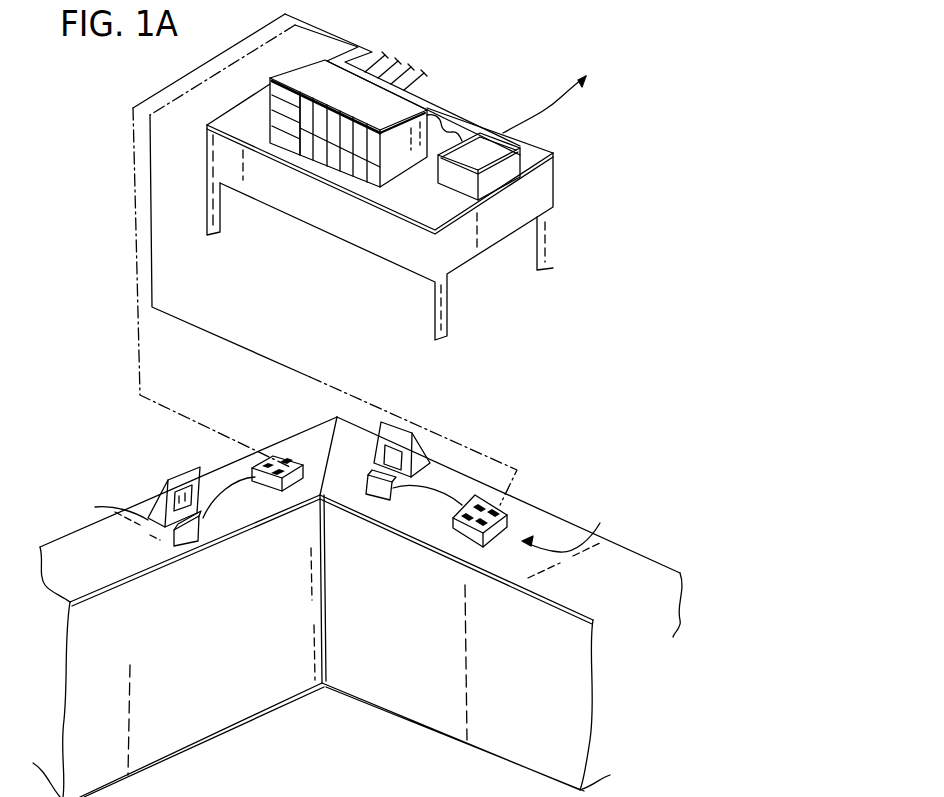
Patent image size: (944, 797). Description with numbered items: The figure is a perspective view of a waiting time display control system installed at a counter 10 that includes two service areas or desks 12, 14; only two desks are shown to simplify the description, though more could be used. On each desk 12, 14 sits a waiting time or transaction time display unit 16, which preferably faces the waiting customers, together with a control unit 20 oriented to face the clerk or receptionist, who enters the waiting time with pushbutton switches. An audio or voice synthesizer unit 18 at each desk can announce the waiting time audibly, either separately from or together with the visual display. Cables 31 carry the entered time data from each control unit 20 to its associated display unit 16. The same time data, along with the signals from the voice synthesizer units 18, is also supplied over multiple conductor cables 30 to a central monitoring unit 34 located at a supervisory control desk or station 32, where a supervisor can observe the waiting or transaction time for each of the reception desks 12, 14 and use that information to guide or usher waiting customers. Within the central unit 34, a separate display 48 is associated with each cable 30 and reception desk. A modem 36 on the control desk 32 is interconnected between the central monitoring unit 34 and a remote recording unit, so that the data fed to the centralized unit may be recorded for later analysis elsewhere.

The counter 10 is at (380, 698).
The service desk 12 is at (88, 521).
The service desk 14 is at (624, 531).
The time display unit 16 is at (167, 483).
The voice synthesizer unit 18 is at (195, 543).
The control unit 20 is at (268, 490).
The multiple conductor cable 30 is at (337, 33).
The cable 31 is at (218, 488).
The control desk 32 is at (308, 170).
The central monitoring unit 34 is at (398, 103).
The modem 36 is at (477, 140).
The display 48 is at (291, 143).